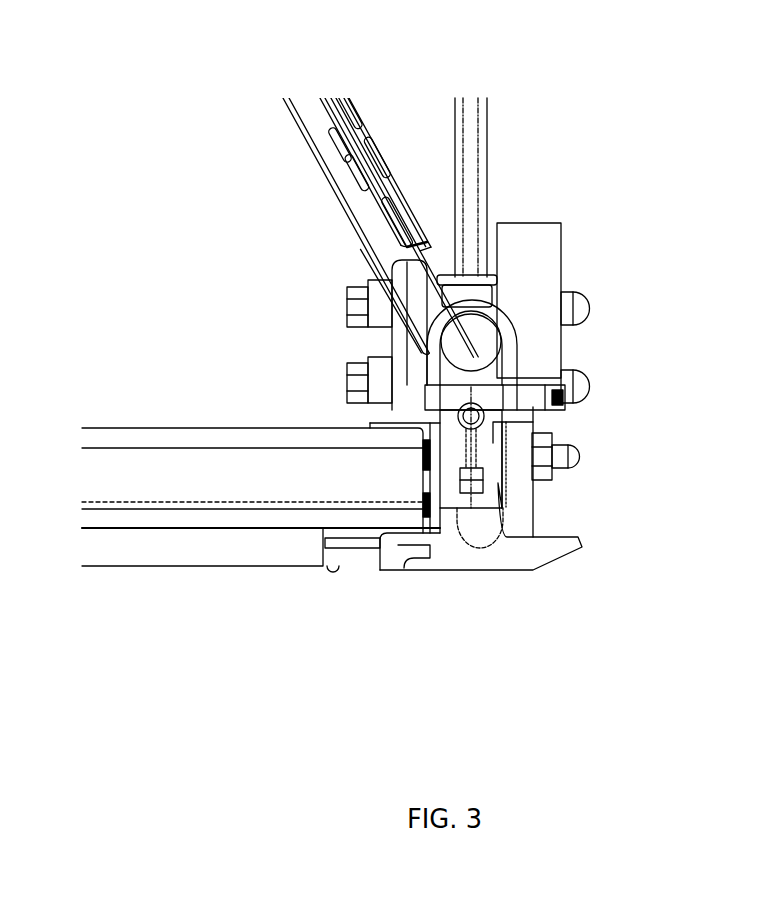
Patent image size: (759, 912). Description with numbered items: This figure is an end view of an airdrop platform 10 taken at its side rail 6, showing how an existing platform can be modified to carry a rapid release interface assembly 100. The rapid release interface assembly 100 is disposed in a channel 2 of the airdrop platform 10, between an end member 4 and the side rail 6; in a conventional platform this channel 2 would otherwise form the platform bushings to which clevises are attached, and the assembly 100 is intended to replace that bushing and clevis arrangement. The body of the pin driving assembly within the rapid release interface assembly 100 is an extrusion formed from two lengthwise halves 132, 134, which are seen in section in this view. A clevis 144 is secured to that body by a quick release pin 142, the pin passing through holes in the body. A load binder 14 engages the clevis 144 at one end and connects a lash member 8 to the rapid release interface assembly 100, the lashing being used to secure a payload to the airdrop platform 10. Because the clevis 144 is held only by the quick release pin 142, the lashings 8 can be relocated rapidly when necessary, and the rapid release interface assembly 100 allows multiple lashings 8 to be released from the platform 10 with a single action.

The channel 2 is at (479, 545).
The end member 4 is at (425, 487).
The side rail 6 is at (522, 520).
The lash member 8 is at (487, 110).
The airdrop platform 10 is at (96, 426).
The load binder 14 is at (367, 130).
The rapid release interface assembly 100 is at (498, 388).
The outer body half 132 is at (489, 512).
The body half 134 is at (455, 510).
The quick release pin 142 is at (557, 404).
The clevis 144 is at (495, 328).